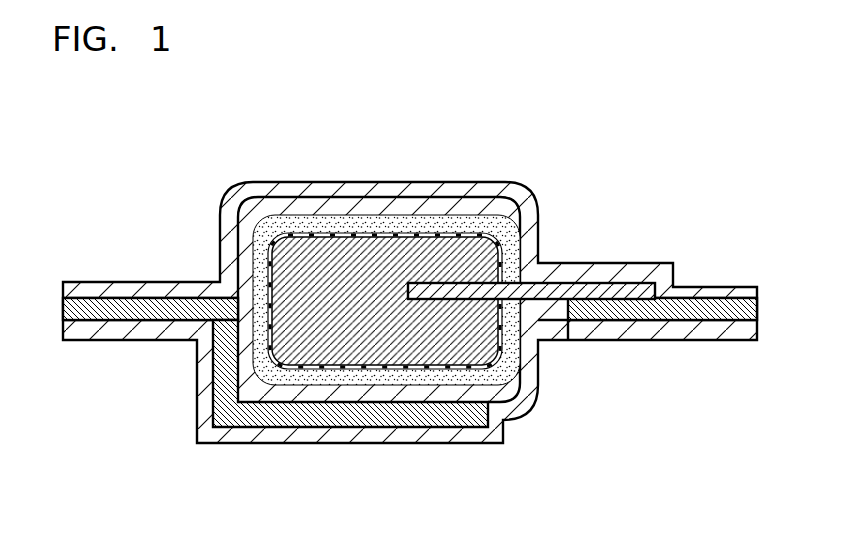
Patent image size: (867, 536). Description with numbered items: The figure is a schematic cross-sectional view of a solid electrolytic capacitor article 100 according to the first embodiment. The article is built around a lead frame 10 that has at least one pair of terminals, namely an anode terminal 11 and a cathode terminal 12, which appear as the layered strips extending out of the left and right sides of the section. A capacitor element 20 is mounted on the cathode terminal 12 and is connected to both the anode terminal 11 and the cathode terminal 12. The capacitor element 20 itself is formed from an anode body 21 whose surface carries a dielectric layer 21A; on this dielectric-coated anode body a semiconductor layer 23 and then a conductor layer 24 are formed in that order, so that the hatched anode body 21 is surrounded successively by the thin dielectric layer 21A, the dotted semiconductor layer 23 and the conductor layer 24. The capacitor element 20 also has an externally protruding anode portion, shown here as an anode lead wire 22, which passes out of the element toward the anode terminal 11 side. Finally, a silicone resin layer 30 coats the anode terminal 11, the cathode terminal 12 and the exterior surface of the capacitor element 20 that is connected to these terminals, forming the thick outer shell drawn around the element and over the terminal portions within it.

The solid electrolytic capacitor article 100 is at (677, 107).
The lead frame 10 is at (107, 320).
The anode terminal 11 is at (656, 308).
The cathode terminal 12 is at (275, 412).
The capacitor element 20 is at (405, 245).
The anode body 21 is at (345, 245).
The dielectric layer 21A is at (373, 233).
The anode lead wire 22 is at (590, 289).
The semiconductor layer 23 is at (407, 218).
The conductor layer 24 is at (458, 203).
The silicone resin layer 30 is at (288, 192).